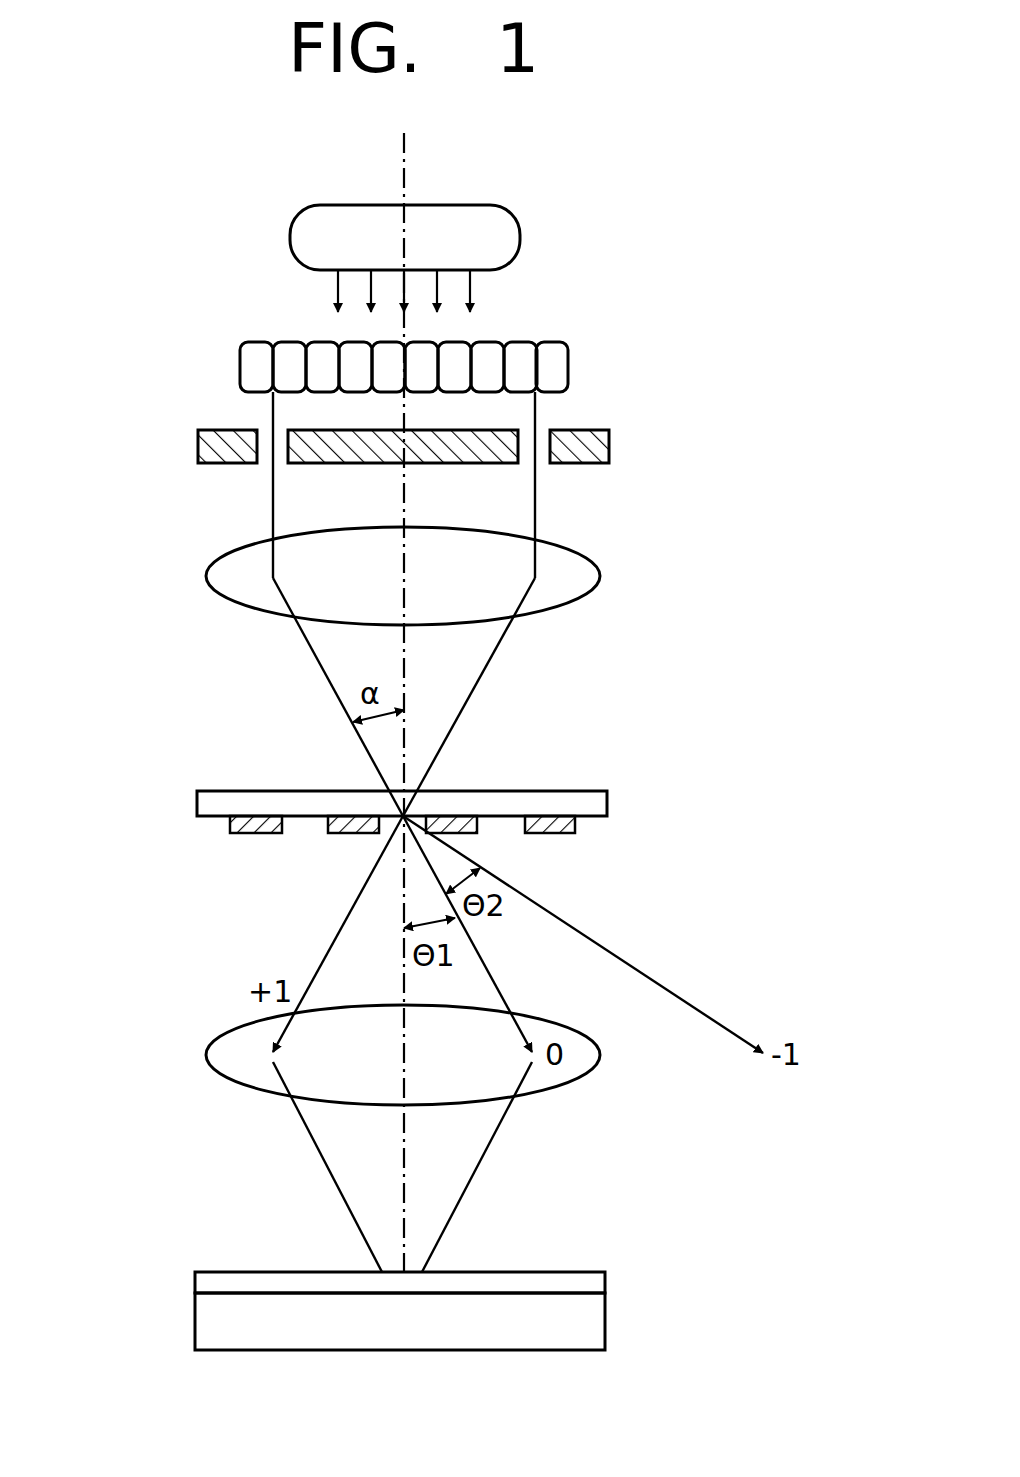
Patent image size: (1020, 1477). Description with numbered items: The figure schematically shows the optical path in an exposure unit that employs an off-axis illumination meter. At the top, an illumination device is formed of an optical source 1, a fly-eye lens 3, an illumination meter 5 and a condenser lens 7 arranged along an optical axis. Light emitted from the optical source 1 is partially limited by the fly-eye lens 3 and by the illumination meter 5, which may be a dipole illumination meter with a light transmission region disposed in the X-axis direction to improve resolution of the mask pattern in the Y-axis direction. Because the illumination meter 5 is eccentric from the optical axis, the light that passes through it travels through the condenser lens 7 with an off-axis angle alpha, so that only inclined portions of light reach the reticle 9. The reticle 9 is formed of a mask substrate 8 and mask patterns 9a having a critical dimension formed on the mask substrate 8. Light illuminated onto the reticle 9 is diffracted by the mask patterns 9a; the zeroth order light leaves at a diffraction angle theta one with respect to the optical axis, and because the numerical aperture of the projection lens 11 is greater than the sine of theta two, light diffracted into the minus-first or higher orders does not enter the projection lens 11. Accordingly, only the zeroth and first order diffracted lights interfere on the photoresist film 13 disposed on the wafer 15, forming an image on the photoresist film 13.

The optical source 1 is at (290, 237).
The fly-eye lens 3 is at (240, 364).
The illumination meter 5 is at (198, 446).
The condenser lens 7 is at (207, 576).
The mask substrate 8 is at (197, 800).
The reticle 9 is at (648, 775).
The mask patterns 9a is at (232, 823).
The projection lens 11 is at (207, 1053).
The photoresist film 13 is at (205, 1283).
The wafer 15 is at (205, 1325).